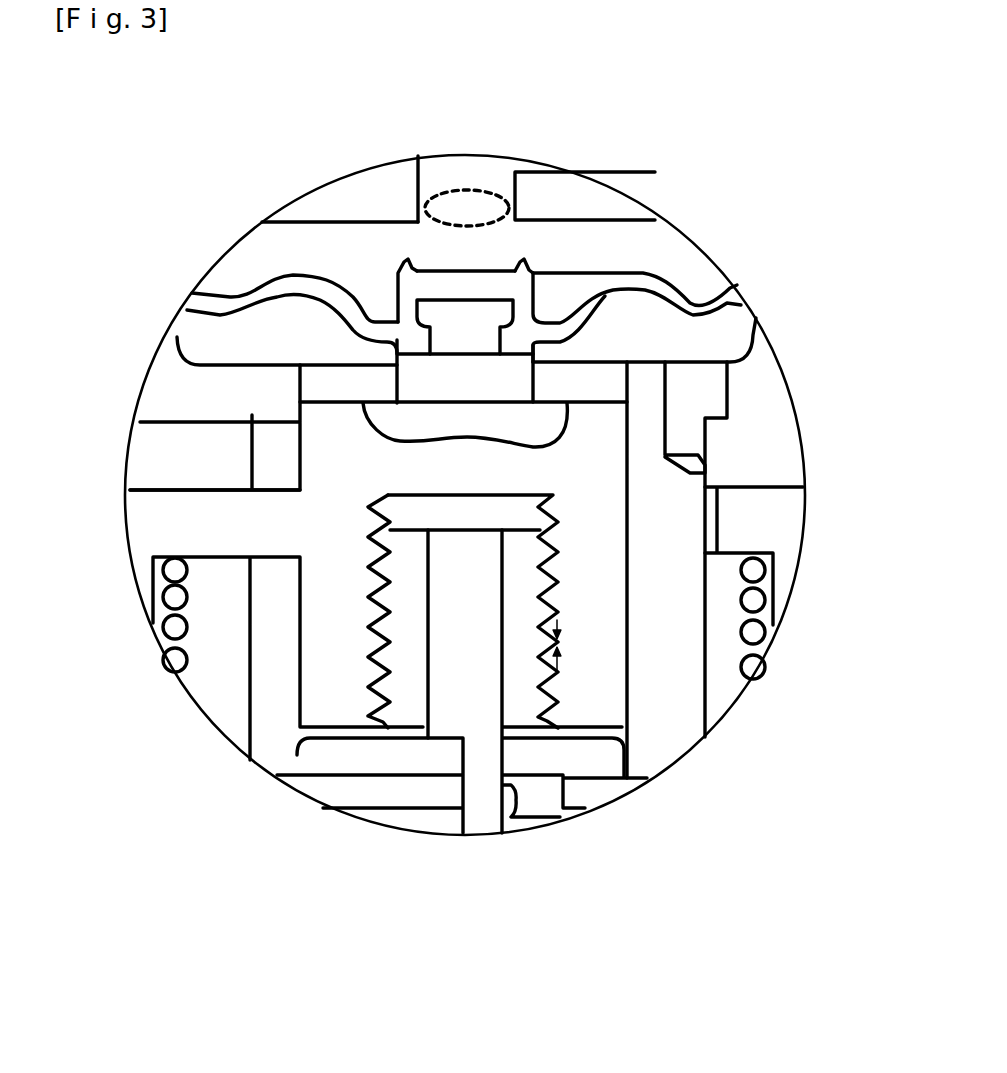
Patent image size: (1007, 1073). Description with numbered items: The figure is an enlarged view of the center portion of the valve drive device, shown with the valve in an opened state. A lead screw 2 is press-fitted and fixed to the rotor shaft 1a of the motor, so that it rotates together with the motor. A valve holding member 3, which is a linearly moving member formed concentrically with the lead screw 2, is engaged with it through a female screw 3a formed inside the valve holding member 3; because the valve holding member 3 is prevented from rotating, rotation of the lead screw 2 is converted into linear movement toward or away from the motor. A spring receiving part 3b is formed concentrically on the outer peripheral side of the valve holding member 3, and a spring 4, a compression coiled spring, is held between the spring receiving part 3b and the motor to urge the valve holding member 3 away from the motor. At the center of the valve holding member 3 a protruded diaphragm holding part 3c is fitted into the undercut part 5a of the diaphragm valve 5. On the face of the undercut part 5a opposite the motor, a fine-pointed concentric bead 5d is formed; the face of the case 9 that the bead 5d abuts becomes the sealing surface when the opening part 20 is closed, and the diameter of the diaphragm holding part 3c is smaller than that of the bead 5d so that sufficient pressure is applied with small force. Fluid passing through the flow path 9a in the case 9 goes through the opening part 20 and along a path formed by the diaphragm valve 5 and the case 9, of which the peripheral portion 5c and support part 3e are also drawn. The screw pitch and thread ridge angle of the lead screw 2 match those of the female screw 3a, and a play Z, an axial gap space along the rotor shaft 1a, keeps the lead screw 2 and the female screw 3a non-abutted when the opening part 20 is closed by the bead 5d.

The rotor shaft 1a is at (463, 660).
The lead screw 2 is at (402, 665).
The valve holding member 3 is at (153, 480).
The female screw 3a is at (545, 510).
The spring receiving part 3b is at (150, 527).
The diaphragm holding part 3c is at (447, 315).
The diaphragm support 3e is at (510, 370).
The spring 4 is at (172, 622).
The diaphragm valve 5 is at (193, 297).
The undercut part 5a is at (483, 282).
The diaphragm peripheral portion 5c is at (640, 277).
The bead 5d is at (530, 268).
The case 9 is at (327, 210).
The flow path 9a is at (434, 167).
The opening part 20 is at (478, 190).
The play Z is at (550, 643).